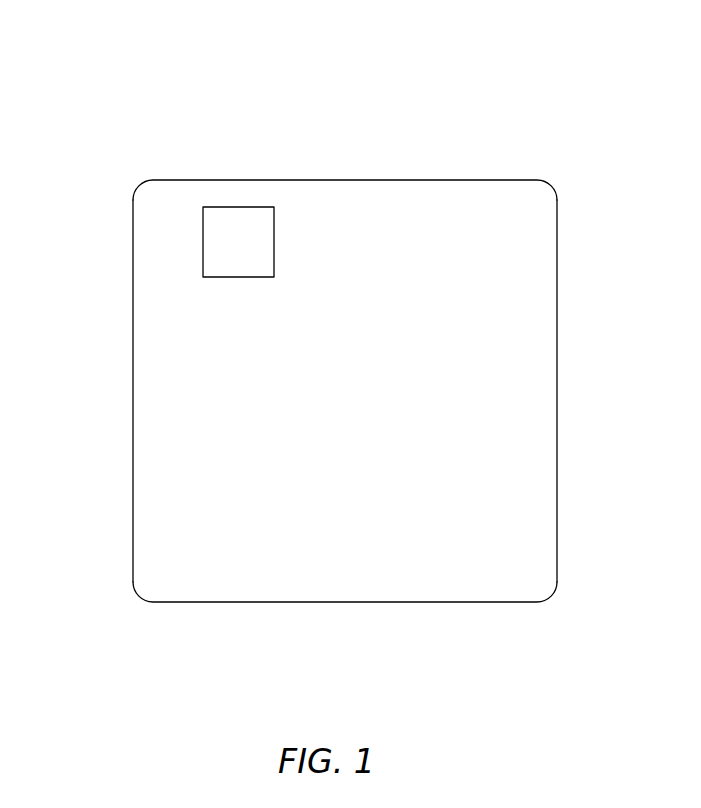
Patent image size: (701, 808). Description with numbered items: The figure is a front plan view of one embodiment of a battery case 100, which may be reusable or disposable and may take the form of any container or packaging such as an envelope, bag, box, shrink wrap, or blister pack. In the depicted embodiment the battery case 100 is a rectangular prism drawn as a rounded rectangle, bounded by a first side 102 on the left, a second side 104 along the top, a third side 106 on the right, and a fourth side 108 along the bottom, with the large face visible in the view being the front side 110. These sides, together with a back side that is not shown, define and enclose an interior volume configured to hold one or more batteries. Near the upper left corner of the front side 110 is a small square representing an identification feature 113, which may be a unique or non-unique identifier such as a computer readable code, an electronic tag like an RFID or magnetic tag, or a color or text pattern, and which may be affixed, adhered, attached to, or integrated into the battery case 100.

The battery case 100 is at (533, 106).
The first side 102 is at (133, 395).
The second side 104 is at (347, 180).
The third side 106 is at (557, 295).
The fourth side 108 is at (350, 603).
The front side 110 is at (535, 428).
The identification feature 113 is at (237, 207).